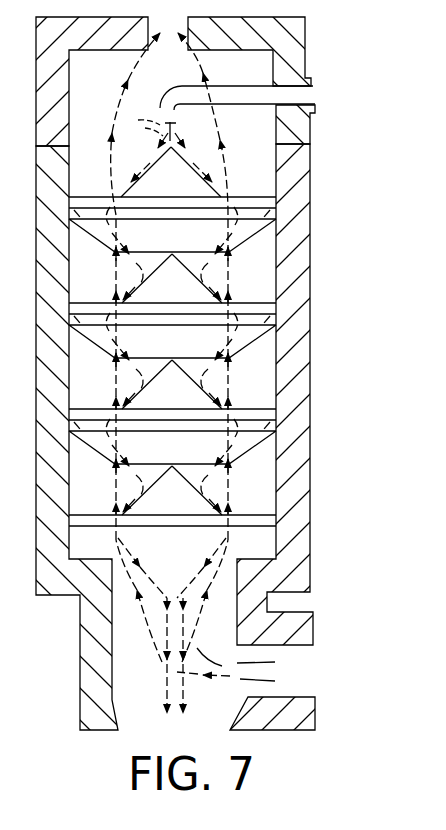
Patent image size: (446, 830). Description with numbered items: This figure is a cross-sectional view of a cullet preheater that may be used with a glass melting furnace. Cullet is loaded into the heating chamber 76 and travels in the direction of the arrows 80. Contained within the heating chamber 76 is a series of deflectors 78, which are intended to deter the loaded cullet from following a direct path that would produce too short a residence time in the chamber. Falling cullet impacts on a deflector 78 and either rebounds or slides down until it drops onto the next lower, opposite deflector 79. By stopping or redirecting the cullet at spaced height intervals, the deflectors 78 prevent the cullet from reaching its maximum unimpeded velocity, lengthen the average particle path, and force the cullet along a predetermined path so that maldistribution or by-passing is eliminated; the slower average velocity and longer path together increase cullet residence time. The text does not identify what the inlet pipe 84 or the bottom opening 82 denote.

The heating chamber 76 is at (311, 342).
The deflector 78 is at (247, 236).
The next lower opposite deflector 79 is at (213, 290).
The arrows 80 is at (167, 124).
The gas inlet 82 is at (222, 668).
The inlet pipe 84 is at (311, 82).